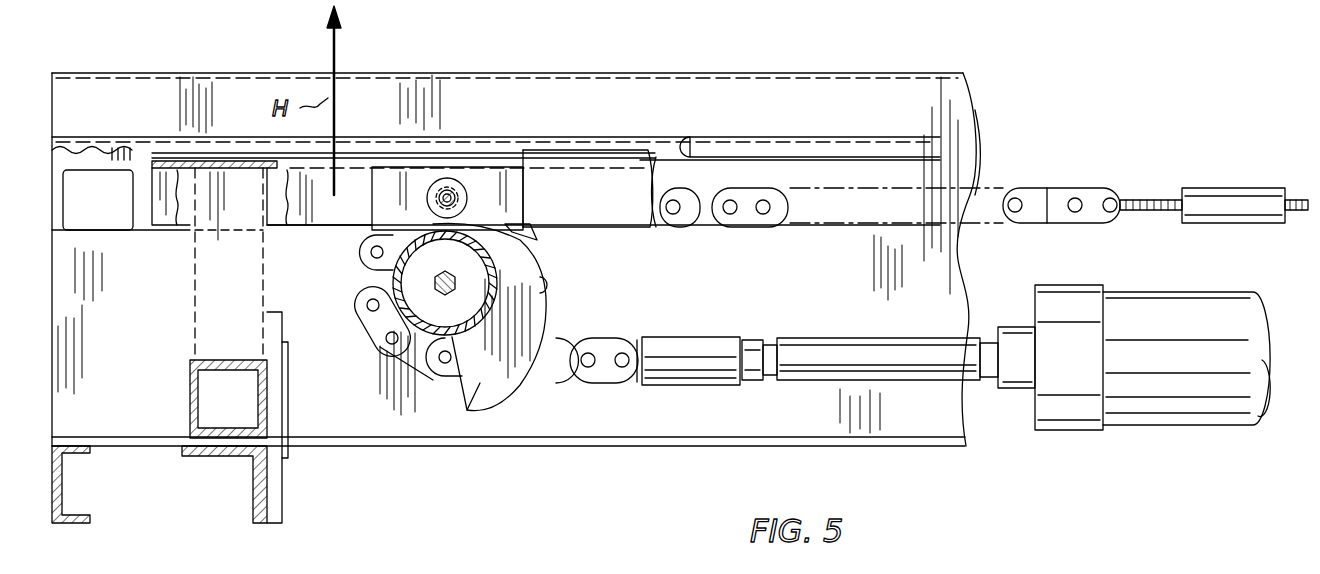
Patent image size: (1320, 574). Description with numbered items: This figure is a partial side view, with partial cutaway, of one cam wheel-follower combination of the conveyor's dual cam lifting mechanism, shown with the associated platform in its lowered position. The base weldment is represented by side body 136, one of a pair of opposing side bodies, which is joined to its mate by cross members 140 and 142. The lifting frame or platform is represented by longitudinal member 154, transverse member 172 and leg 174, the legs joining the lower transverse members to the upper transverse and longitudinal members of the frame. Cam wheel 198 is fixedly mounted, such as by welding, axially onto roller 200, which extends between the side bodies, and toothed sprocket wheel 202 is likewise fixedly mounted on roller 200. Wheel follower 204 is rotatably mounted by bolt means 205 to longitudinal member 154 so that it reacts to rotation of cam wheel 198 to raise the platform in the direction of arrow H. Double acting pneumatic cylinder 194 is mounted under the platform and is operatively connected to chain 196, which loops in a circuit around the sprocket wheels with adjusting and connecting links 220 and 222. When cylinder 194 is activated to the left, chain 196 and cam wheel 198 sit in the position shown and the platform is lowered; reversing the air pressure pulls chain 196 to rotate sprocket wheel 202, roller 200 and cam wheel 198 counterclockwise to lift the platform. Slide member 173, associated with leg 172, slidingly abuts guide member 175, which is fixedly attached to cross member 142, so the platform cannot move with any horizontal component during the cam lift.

The side body 136 is at (657, 415).
The cross member 140 is at (74, 484).
The cross member 142 is at (254, 483).
The longitudinal member 154 is at (640, 198).
The transverse member 172 is at (188, 396).
The slide member 173 is at (284, 403).
The leg 174 is at (214, 290).
The guide member 175 is at (278, 447).
The double acting pneumatic cylinder 194 is at (1188, 386).
The chain 196 is at (603, 338).
The cam wheel 198 is at (480, 383).
The roller 200 is at (422, 281).
The toothed sprocket wheel 202 is at (534, 245).
The wheel follower 204 is at (450, 180).
The bolt means 205 is at (447, 198).
The adjusting and connecting link 220 is at (716, 302).
The adjusting and connecting link 222 is at (1223, 205).